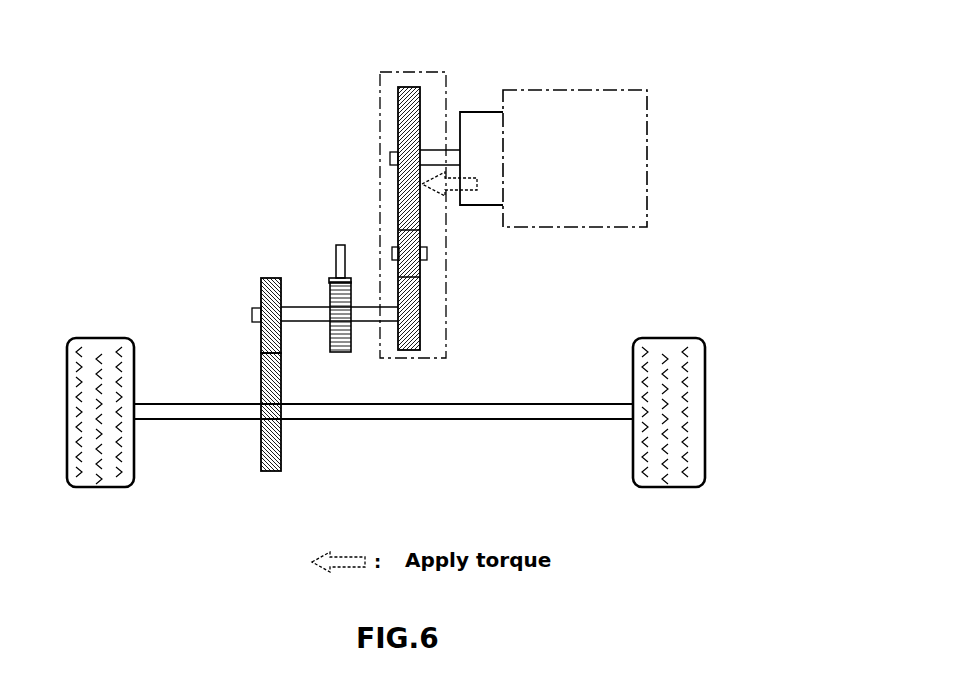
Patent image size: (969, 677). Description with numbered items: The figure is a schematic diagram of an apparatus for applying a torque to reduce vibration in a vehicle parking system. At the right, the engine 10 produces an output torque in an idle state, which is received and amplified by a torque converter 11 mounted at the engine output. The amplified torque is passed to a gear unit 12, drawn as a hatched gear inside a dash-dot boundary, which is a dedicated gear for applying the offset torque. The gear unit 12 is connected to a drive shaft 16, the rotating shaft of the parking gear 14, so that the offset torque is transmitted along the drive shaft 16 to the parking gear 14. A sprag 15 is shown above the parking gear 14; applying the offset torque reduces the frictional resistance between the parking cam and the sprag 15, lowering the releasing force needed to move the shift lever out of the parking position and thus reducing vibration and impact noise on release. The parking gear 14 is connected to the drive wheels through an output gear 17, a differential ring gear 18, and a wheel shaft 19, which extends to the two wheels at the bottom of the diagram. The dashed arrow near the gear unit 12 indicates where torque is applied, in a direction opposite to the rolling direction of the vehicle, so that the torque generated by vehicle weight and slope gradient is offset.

The engine 10 is at (570, 90).
The torque converter 11 is at (483, 110).
The gear unit 12 is at (380, 92).
The parking gear 14 is at (330, 288).
The sprag 15 is at (341, 245).
The drive shaft 16 is at (370, 323).
The output gear 17 is at (270, 278).
The differential ring gear 18 is at (263, 473).
The wheel shaft 19 is at (552, 404).